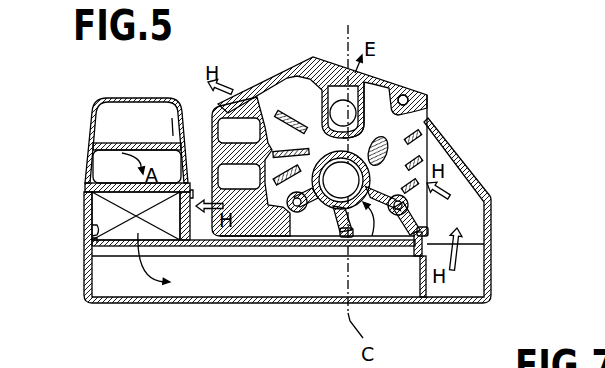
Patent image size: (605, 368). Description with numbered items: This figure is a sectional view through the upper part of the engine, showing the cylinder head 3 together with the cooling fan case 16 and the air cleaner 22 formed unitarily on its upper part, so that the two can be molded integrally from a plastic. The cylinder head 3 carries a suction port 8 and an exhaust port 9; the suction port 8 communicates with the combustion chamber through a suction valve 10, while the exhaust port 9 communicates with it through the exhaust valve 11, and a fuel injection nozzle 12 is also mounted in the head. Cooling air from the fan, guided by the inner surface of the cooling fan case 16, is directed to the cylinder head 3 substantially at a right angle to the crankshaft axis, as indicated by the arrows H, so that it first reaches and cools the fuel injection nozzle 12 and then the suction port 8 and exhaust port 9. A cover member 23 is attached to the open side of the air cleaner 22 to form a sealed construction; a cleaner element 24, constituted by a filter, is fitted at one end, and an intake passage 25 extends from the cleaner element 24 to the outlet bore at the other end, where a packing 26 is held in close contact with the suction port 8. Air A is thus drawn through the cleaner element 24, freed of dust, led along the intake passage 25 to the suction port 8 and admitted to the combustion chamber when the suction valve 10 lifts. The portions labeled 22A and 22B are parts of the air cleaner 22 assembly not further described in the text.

The cylinder head 3 is at (378, 184).
The suction port 8 is at (338, 204).
The exhaust port 9 is at (343, 82).
The suction valve 10 is at (332, 190).
The exhaust valve 11 is at (380, 122).
The fuel injection nozzle 12 is at (402, 96).
The cooling fan case 16 is at (102, 307).
The air cleaner 22 is at (159, 312).
The left retaining lip 22A is at (88, 226).
The right retaining bracket 22B is at (393, 246).
The cover member 23 is at (205, 246).
The cleaner element 24 is at (98, 212).
The intake passage 25 is at (233, 287).
The packing 26 is at (427, 231).